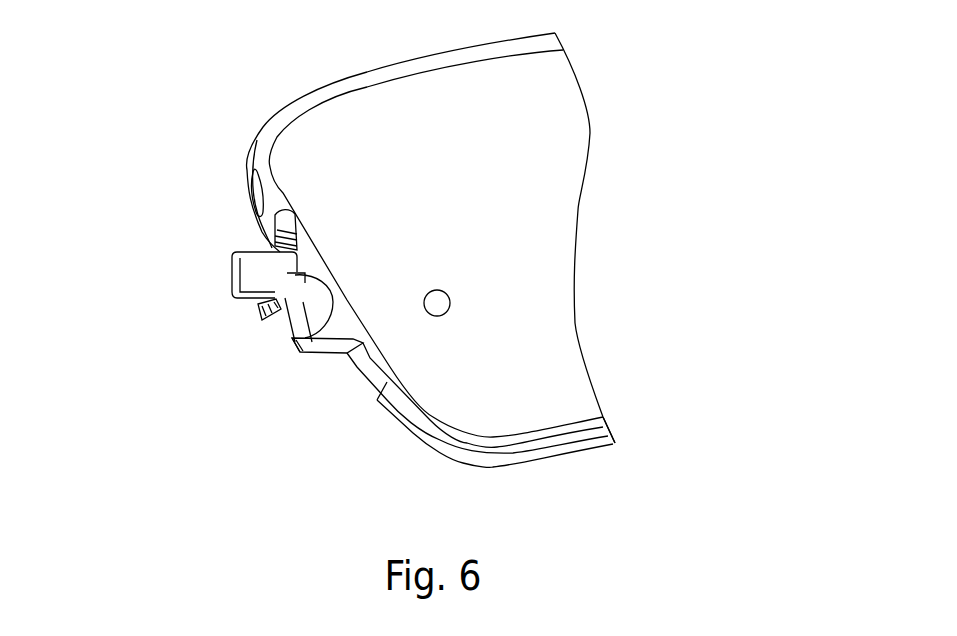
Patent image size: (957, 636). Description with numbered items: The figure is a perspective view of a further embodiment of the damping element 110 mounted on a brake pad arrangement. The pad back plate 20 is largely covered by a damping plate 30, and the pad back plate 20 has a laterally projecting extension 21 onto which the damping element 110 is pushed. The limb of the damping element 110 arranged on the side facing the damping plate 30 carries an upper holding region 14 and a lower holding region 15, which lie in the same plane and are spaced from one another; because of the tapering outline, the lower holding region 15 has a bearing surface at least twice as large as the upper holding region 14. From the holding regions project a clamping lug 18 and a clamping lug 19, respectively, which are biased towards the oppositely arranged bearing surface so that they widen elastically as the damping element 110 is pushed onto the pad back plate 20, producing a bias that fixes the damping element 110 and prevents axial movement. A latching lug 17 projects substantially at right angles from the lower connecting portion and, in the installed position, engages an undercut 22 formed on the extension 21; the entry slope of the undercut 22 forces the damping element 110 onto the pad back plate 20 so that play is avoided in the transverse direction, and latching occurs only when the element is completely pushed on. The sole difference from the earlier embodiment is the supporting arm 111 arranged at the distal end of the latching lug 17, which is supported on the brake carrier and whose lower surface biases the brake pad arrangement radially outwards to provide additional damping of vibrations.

The damping plate 30 is at (402, 142).
The pad back plate 20 is at (268, 142).
The clamping lug 18 is at (300, 236).
The upper holding region 14 is at (283, 227).
The extension 21 is at (255, 265).
The undercut 22 is at (280, 297).
The clamping lug 19 is at (297, 282).
The lower holding region 15 is at (315, 308).
The latching lug 17 is at (278, 313).
The supporting arm 111 is at (257, 323).
The damping element 110 is at (336, 311).